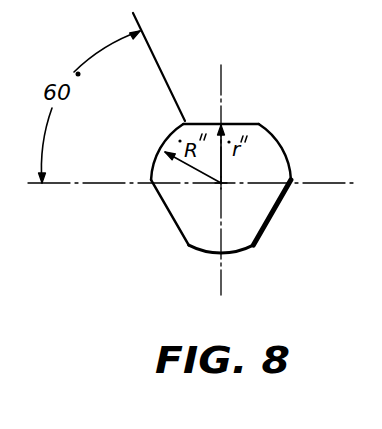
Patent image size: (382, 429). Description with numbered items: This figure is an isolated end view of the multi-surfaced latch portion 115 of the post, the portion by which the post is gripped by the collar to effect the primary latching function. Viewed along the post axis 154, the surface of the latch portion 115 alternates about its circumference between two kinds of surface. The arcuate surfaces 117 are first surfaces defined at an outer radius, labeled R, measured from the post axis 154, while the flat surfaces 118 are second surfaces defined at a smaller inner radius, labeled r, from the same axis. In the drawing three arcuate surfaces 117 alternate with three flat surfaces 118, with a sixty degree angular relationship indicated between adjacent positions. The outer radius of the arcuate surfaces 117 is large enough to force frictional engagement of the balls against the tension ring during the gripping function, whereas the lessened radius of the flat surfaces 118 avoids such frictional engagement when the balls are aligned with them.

The latch portion 115 is at (262, 122).
The arcuate surface 117 is at (288, 158).
The flat surface 118 is at (244, 122).
The post axis 154 is at (213, 196).